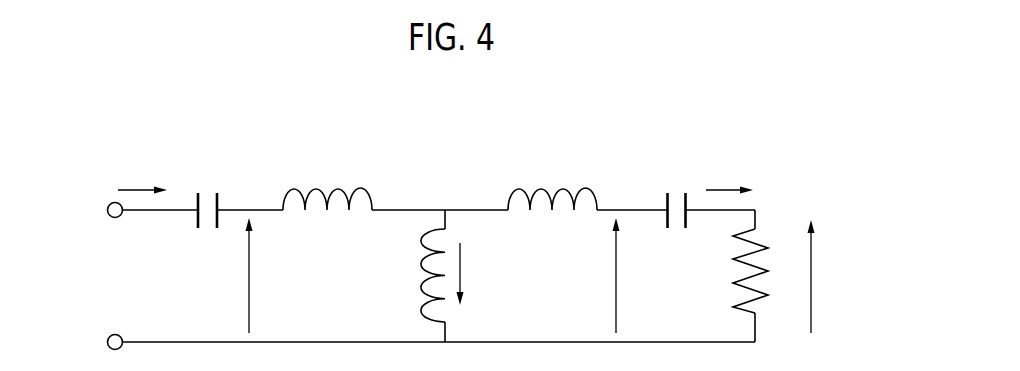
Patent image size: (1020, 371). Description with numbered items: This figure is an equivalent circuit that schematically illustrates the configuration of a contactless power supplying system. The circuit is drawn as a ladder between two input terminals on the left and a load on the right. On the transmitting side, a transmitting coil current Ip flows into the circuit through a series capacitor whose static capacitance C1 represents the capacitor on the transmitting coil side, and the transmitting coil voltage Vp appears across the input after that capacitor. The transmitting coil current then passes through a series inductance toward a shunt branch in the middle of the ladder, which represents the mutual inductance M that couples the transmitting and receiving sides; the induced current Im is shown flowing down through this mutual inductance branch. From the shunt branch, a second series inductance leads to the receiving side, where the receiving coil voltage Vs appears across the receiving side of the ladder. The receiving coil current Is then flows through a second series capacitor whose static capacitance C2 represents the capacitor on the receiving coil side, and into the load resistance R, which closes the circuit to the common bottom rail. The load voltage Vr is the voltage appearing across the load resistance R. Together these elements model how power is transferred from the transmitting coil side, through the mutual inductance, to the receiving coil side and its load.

The static capacitance of the capacitor on the transmitting coil side C1 is at (205, 193).
The static capacitance of the capacitor on the receiving coil side C2 is at (677, 193).
The mutual inductance M is at (416, 275).
The load resistance R is at (761, 271).
The transmitting coil current Ip is at (142, 176).
The receiving coil current Is is at (729, 176).
The transmitting coil voltage Vp is at (268, 275).
The induced current Im is at (476, 274).
The receiving coil voltage Vs is at (631, 275).
The load voltage Vr is at (828, 276).